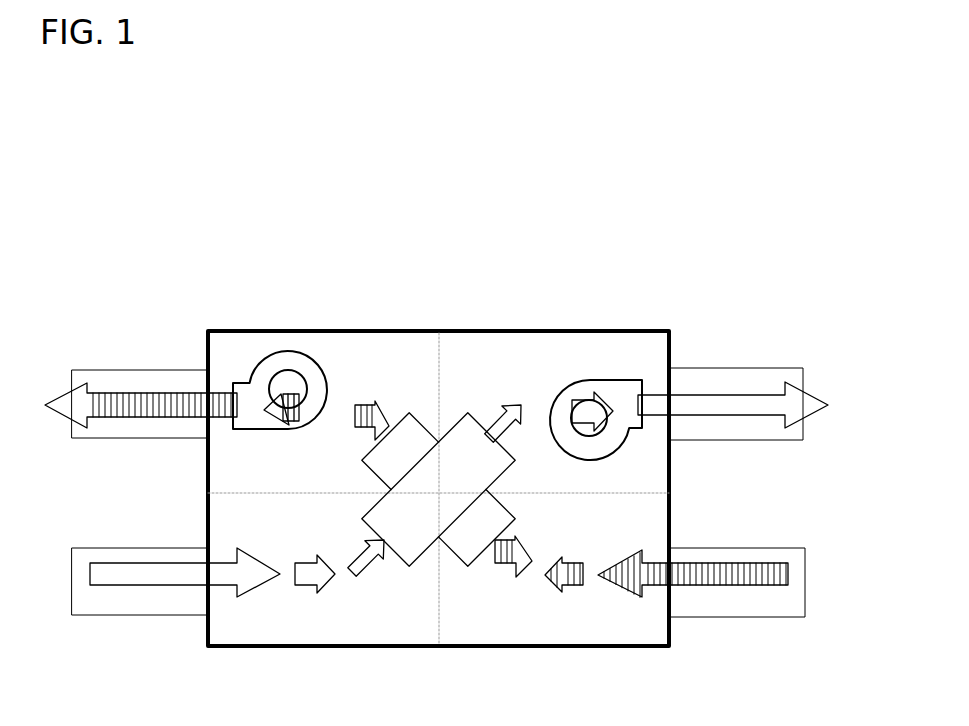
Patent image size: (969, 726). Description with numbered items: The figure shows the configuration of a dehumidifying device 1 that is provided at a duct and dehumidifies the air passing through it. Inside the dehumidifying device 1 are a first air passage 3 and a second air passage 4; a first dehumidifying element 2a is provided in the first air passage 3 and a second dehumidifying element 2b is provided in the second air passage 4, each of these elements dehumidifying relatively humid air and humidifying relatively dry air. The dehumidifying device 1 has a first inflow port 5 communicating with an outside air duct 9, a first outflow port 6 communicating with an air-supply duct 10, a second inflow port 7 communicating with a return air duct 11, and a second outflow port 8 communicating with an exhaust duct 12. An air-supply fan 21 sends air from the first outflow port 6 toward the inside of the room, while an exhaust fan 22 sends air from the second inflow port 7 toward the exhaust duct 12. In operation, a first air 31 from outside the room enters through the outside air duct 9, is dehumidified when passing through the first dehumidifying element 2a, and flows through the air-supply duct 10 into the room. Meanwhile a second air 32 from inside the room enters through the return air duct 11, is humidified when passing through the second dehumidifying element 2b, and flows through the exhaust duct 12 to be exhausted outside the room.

The dehumidifying device 1 is at (659, 218).
The first dehumidifying element 2a is at (413, 440).
The second dehumidifying element 2b is at (471, 443).
The first air passage 3 is at (519, 330).
The second air passage 4 is at (359, 328).
The first inflow port 5 is at (207, 560).
The first outflow port 6 is at (673, 418).
The second inflow port 7 is at (672, 557).
The second outflow port 8 is at (203, 428).
The outside air duct 9 is at (103, 605).
The air-supply duct 10 is at (763, 384).
The return air duct 11 is at (778, 605).
The exhaust duct 12 is at (125, 383).
The air-supply fan 21 is at (617, 381).
The exhaust fan 22 is at (310, 353).
The first air 31 is at (706, 407).
The second air 32 is at (160, 407).